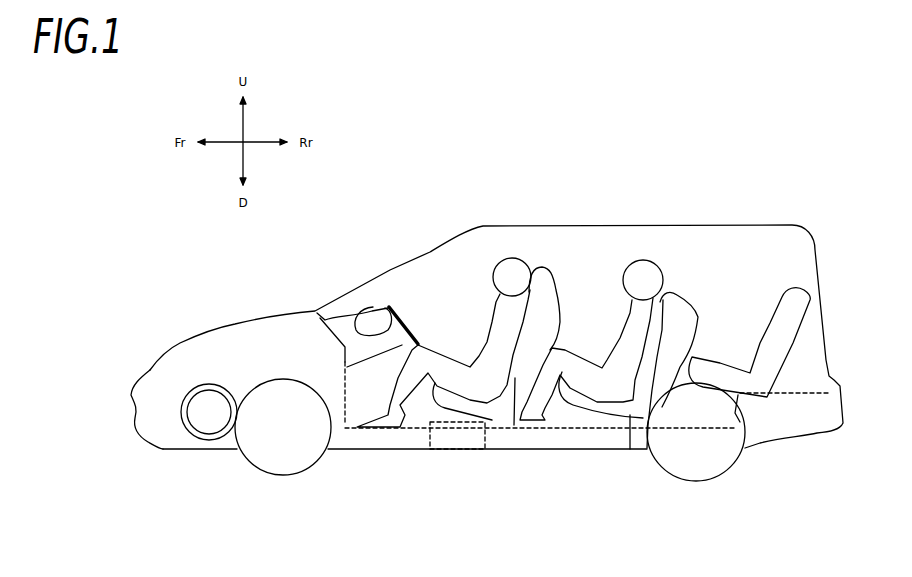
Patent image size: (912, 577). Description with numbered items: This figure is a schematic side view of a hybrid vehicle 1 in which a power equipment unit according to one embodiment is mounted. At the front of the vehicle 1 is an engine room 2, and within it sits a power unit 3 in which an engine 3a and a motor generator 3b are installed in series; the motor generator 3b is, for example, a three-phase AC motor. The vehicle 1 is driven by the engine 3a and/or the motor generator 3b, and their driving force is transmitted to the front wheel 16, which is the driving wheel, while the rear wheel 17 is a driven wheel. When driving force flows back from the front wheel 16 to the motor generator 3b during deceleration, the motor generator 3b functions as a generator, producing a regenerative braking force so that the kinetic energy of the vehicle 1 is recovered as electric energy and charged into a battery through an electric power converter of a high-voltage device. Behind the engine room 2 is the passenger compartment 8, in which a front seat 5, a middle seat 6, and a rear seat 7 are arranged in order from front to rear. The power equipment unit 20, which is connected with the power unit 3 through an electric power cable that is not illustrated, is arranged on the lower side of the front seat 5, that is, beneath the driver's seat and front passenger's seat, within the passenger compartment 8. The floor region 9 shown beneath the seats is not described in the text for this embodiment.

The vehicle 1 is at (555, 173).
The engine room 2 is at (173, 391).
The power unit 3 is at (197, 398).
The engine 3a is at (188, 412).
The motor generator 3b is at (212, 426).
The front seat 5 is at (540, 412).
The middle seat 6 is at (637, 405).
The rear seat 7 is at (782, 352).
The passenger compartment 8 is at (592, 281).
The floor panel 9 is at (582, 430).
The front wheel 16 is at (280, 460).
The rear wheel 17 is at (692, 462).
The power equipment unit 20 is at (448, 437).